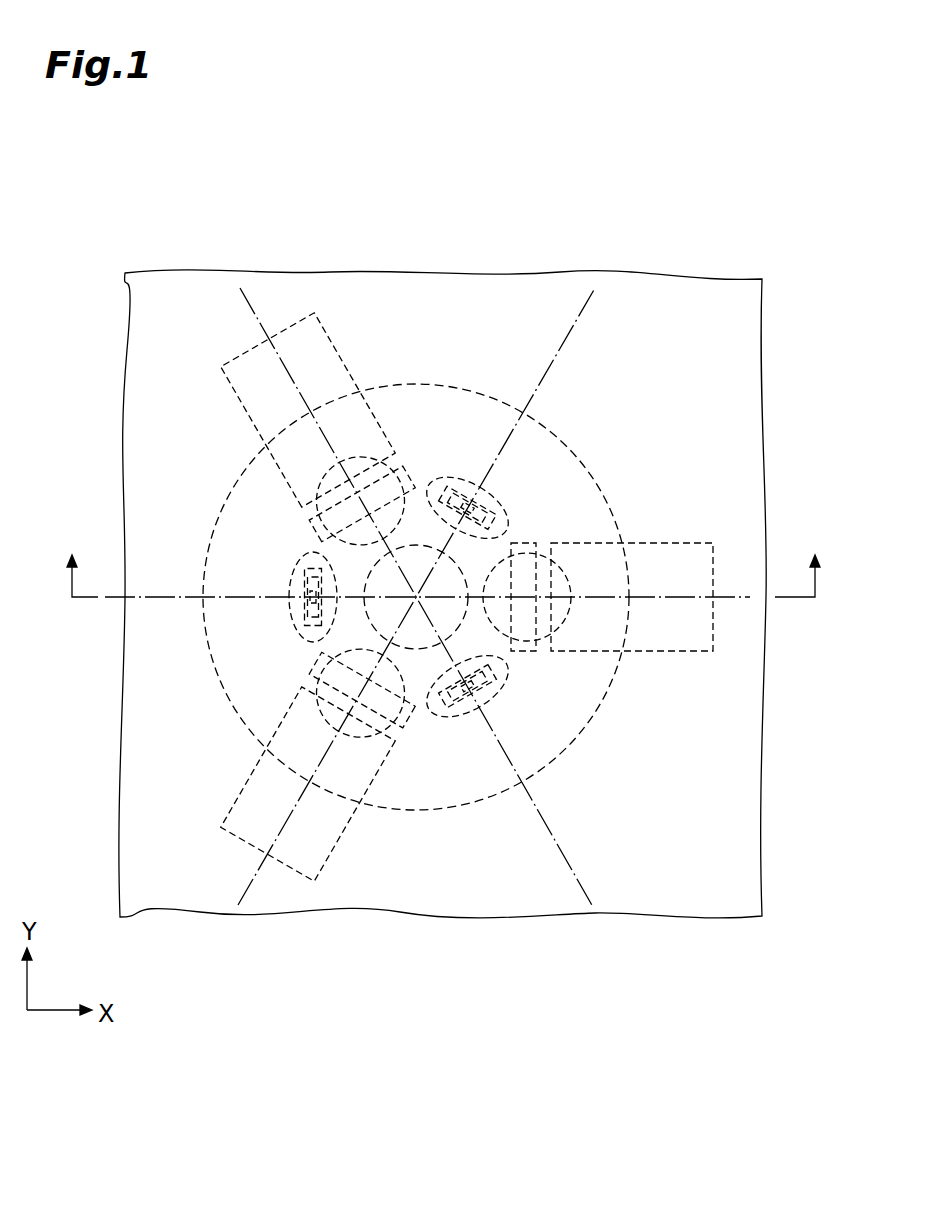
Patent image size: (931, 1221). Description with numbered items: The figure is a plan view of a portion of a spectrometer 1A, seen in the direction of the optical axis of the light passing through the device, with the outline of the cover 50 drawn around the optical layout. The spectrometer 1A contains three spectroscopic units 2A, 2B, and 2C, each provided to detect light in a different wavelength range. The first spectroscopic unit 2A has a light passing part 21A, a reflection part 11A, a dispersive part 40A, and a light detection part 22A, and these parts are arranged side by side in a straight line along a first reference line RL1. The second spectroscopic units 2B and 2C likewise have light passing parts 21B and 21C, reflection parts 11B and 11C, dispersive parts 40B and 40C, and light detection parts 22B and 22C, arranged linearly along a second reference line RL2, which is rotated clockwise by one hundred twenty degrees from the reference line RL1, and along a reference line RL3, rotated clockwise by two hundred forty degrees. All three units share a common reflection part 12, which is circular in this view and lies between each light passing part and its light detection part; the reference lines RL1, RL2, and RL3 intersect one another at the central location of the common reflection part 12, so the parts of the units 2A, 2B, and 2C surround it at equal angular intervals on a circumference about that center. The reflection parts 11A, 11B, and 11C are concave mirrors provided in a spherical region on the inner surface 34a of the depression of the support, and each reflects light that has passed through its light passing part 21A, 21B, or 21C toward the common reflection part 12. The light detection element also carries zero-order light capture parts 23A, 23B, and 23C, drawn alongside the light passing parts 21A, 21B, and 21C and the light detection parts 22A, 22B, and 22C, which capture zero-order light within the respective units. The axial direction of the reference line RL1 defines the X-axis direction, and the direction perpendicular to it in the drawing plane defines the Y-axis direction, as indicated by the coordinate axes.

The spectrometer 1A is at (643, 254).
The cover 50 is at (702, 297).
The first reference line RL1 is at (737, 592).
The second reference line RL2 is at (588, 302).
The reference line RL3 is at (247, 302).
The inner surface of the depression 34a is at (556, 436).
The common reflection part 12 is at (416, 545).
The first spectroscopic unit 2A is at (430, 588).
The second spectroscopic unit 2B is at (456, 622).
The second spectroscopic unit 2C is at (414, 552).
The first reflection part 11A is at (296, 565).
The second reflection part 11B is at (497, 490).
The second reflection part 11C is at (508, 678).
The first light passing part 21A is at (305, 600).
The second light passing part 21B is at (464, 482).
The second light passing part 21C is at (492, 701).
The first light detection part 22A is at (673, 542).
The second light detection part 22B is at (334, 847).
The second light detection part 22C is at (335, 348).
The zero-order light capture part 23A is at (526, 643).
The zero-order light capture part 23B is at (326, 661).
The zero-order light capture part 23C is at (395, 468).
The first dispersive part 40A is at (535, 542).
The second dispersive part 40B is at (405, 730).
The second dispersive part 40C is at (308, 518).